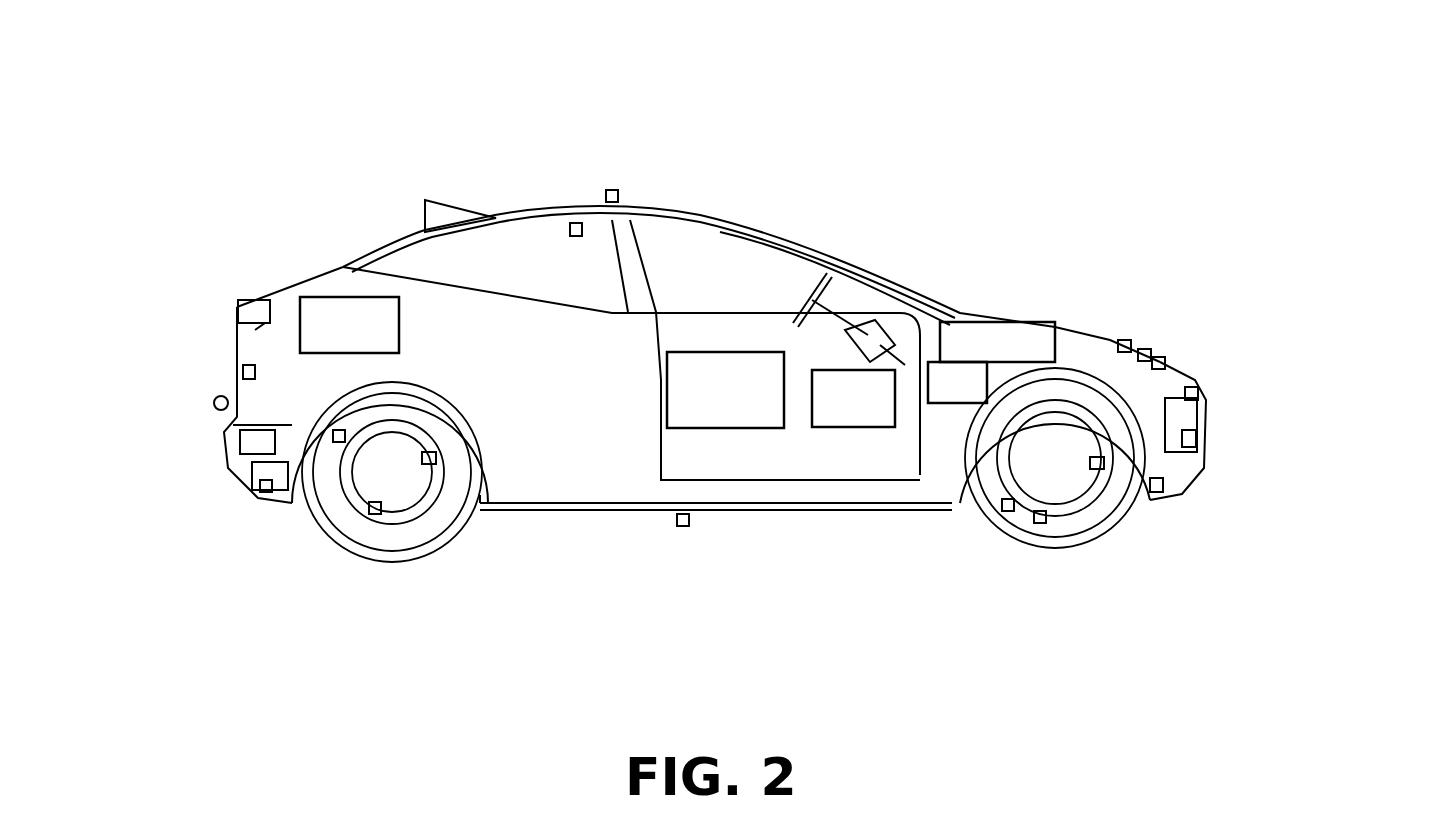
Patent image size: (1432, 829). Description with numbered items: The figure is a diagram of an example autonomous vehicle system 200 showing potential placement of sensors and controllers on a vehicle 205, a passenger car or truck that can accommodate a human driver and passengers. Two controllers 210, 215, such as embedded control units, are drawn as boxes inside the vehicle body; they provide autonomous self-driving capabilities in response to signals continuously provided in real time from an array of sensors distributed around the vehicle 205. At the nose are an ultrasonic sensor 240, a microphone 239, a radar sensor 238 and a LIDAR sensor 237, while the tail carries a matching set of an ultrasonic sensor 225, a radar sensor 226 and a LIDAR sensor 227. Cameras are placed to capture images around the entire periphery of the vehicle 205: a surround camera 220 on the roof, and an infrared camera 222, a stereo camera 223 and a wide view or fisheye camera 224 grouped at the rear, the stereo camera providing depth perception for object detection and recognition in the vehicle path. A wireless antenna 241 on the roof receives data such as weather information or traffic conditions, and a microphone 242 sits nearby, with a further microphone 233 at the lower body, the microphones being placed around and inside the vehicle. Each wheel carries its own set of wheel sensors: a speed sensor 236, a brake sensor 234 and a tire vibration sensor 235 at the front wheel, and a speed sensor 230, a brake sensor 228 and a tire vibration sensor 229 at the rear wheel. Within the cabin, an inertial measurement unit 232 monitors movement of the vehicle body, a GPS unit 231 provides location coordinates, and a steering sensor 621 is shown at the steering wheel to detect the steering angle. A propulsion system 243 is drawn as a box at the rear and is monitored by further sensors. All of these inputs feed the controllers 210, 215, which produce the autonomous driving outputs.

The autonomous vehicle system 200 is at (1116, 172).
The vehicle 205 is at (758, 224).
The controller 210 is at (957, 380).
The controller 215 is at (349, 325).
The surround camera 220 is at (615, 196).
The infrared camera 222 is at (1125, 347).
The stereo camera 223 is at (1145, 355).
The wide view camera 224 is at (1158, 363).
The ultrasonic sensor 225 is at (1194, 395).
The radar sensor 226 is at (1193, 440).
The LIDAR sensor 227 is at (1158, 487).
The brake sensor 228 is at (1097, 466).
The tire vibration sensor 229 is at (1040, 517).
The speed sensor 230 is at (1008, 505).
The GPS unit 231 is at (853, 398).
The inertial measurement unit 232 is at (725, 390).
The microphone 233 is at (680, 520).
The brake sensor 234 is at (430, 460).
The tire vibration sensor 235 is at (373, 510).
The speed sensor 236 is at (339, 437).
The LIDAR sensor 237 is at (262, 487).
The radar sensor 238 is at (238, 440).
The microphone 239 is at (217, 400).
The ultrasonic sensor 240 is at (246, 370).
The wireless antenna 241 is at (425, 200).
The microphone 242 is at (573, 224).
The propulsion system 243 is at (967, 347).
The steering sensor 621 is at (882, 343).